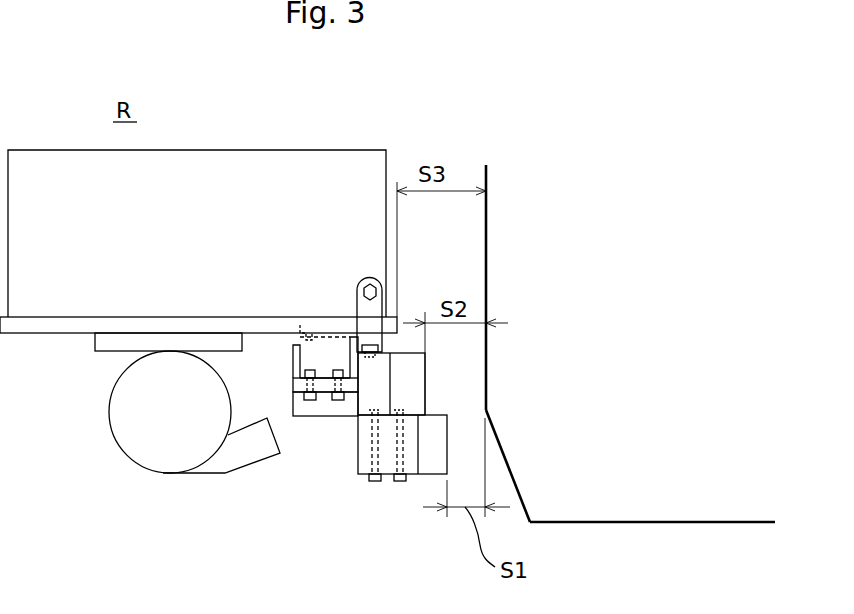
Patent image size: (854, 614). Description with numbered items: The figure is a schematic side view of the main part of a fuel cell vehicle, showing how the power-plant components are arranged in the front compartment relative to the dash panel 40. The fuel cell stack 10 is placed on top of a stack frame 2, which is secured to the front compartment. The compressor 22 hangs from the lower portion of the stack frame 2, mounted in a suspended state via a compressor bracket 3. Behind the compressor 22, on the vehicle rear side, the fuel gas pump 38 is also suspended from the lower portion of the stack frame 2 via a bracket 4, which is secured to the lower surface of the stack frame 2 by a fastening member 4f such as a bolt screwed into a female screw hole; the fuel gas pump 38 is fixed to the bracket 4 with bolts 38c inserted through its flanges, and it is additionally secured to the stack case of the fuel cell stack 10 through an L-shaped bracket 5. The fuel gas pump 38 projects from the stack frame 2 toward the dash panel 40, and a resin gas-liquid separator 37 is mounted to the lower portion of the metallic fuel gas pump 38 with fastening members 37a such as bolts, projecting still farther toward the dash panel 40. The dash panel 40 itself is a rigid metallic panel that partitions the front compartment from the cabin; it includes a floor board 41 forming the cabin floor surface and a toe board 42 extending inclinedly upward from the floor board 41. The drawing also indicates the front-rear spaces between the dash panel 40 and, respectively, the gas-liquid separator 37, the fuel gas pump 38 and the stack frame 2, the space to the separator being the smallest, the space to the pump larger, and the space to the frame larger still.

The fuel cell stack 10 is at (268, 147).
The stack frame 2 is at (50, 325).
The compressor bracket 3 is at (126, 337).
The compressor 22 is at (127, 439).
The bracket 4 is at (290, 305).
The fastening member 4f is at (308, 328).
The L-shaped bracket 5 is at (363, 288).
The bolts 38c is at (330, 398).
The fuel gas pump 38 is at (413, 377).
The gas-liquid separator 37 is at (360, 438).
The fastening members 37a is at (397, 483).
The dash panel 40 is at (487, 255).
The floor board 41 is at (520, 487).
The toe board 42 is at (635, 521).